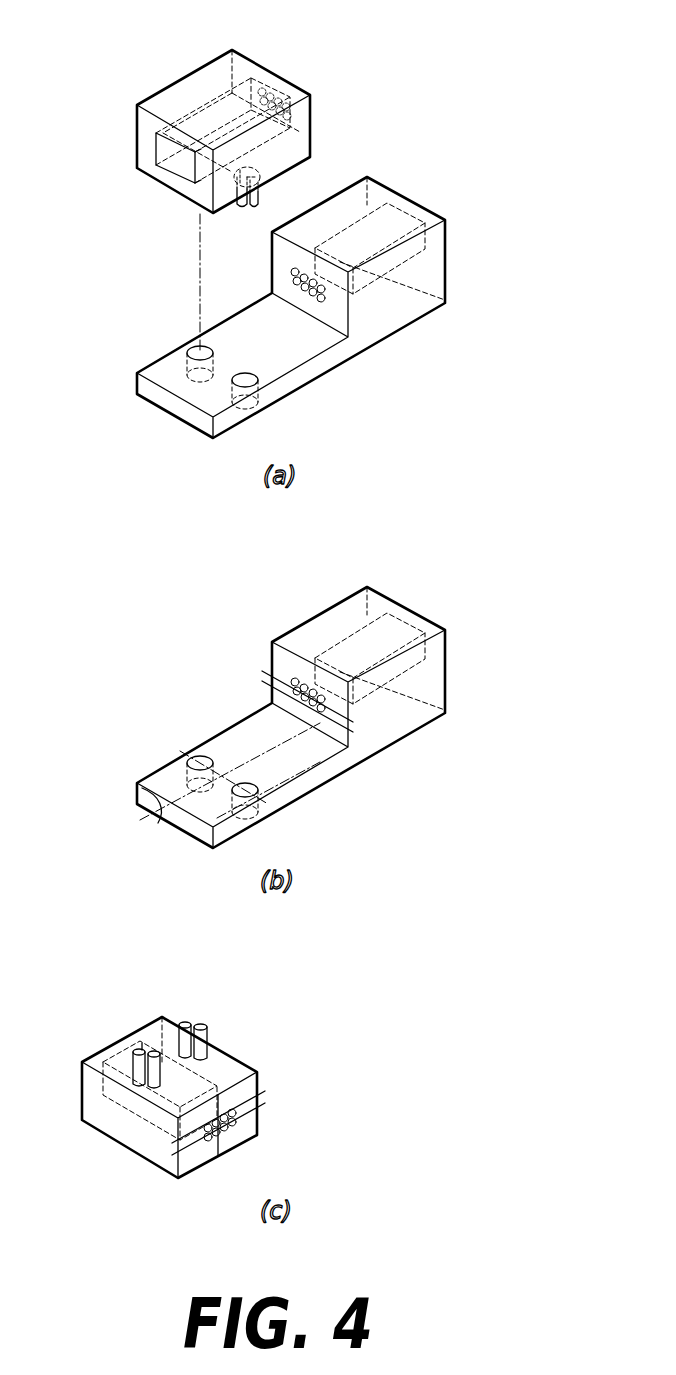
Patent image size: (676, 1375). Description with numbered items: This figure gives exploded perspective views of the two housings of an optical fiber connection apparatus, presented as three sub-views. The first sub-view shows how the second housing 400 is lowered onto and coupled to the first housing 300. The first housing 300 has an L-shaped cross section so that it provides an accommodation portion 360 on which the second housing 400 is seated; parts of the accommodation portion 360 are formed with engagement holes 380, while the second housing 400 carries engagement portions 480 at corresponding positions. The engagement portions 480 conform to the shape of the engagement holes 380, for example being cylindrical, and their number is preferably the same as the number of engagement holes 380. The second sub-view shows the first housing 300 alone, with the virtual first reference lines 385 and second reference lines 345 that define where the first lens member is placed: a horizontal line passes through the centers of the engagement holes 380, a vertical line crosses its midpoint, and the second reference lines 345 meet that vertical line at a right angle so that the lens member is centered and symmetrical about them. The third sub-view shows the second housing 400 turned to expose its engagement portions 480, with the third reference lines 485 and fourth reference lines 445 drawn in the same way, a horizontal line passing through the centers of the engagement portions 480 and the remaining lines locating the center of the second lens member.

The first housing 300 is at (323, 307).
The accommodation portion 360 is at (310, 353).
The engagement holes 380 is at (192, 345).
The second housing 400 is at (220, 113).
The engagement portions 480 is at (264, 197).
The second reference lines 345 is at (276, 630).
The first reference lines 385 is at (172, 735).
The third reference lines 485 is at (171, 1007).
The fourth reference lines 445 is at (256, 1100).